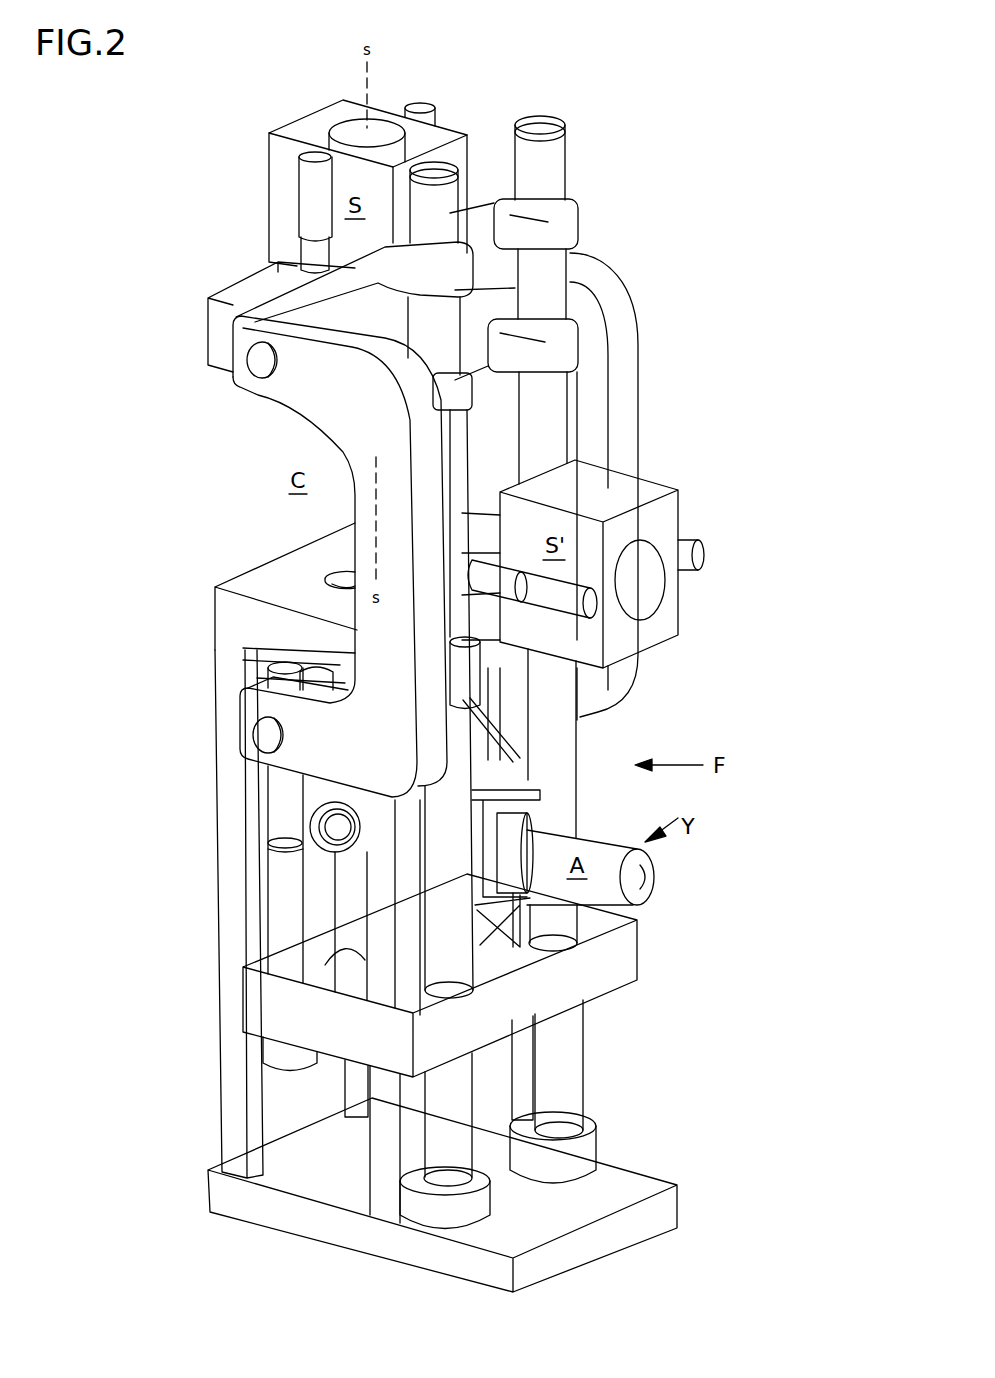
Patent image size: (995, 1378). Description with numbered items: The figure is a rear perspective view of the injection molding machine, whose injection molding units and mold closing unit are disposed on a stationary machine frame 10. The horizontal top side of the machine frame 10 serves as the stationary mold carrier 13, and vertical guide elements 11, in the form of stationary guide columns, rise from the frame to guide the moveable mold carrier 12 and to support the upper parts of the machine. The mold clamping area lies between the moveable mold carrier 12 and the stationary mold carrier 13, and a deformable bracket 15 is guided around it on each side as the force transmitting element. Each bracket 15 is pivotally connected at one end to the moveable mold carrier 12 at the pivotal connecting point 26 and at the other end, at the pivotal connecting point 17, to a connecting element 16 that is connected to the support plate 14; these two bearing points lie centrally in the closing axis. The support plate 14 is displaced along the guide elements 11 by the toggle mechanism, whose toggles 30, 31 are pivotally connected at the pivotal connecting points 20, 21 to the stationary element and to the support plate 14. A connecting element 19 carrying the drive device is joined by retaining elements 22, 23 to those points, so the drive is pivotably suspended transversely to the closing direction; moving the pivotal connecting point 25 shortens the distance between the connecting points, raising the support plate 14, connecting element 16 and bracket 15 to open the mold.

The machine frame 10 is at (232, 842).
The guide elements 11 is at (425, 344).
The moveable mold carrier 12 is at (262, 287).
The stationary mold carrier 13 is at (270, 582).
The support plate 14 is at (503, 1027).
The bracket 15 is at (375, 704).
The connecting element 16 is at (280, 929).
The pivotal connecting point 17 is at (267, 732).
The connecting element 19 is at (540, 803).
The pivotal connecting point 20 is at (324, 583).
The pivotal connecting point 21 is at (343, 963).
The retaining element 22 is at (480, 907).
The retaining element 23 is at (487, 750).
The pivotal connecting point 25 is at (327, 837).
The pivotal connecting point 26 is at (260, 365).
The toggle 30 is at (341, 914).
The toggle 31 is at (350, 797).